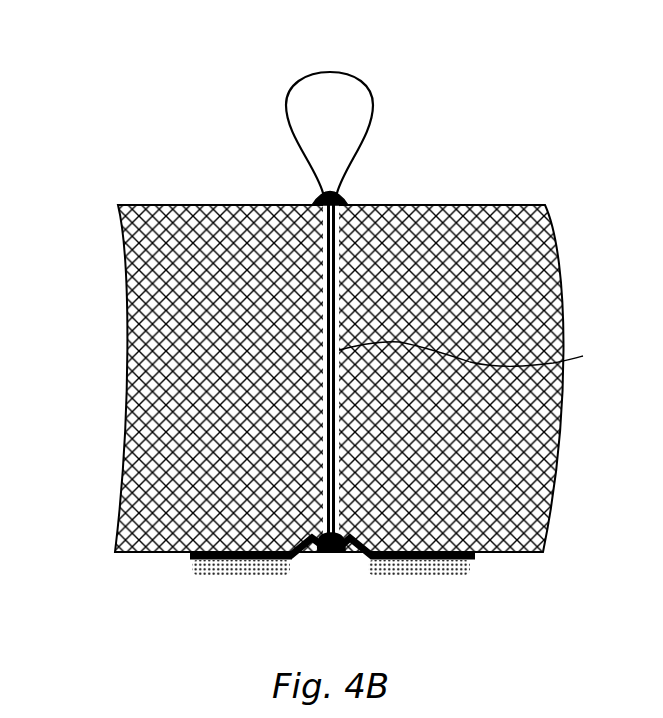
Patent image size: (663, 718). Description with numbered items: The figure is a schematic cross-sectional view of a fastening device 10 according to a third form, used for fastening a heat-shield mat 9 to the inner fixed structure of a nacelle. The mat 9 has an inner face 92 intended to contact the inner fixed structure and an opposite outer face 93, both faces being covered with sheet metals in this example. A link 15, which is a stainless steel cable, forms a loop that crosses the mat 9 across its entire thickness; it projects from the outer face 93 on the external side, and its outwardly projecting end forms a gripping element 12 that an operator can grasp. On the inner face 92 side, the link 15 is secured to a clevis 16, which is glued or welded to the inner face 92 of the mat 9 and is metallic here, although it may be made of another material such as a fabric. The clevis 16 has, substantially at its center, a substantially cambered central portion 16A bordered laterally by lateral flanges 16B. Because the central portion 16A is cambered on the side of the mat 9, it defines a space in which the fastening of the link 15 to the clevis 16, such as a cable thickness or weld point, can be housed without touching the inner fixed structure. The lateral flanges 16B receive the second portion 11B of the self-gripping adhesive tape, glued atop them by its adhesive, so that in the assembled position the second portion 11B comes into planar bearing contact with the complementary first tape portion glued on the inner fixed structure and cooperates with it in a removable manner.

The heat-shield mat 9 is at (546, 250).
The fastening device 10 is at (282, 151).
The gripping element 12 is at (303, 64).
The link 15 is at (475, 356).
The clevis 16 is at (360, 550).
The central portion 16A is at (306, 549).
The lateral flanges 16B is at (186, 558).
The second portion 11B is at (448, 576).
The inner face 92 is at (121, 560).
The outer face 93 is at (462, 205).